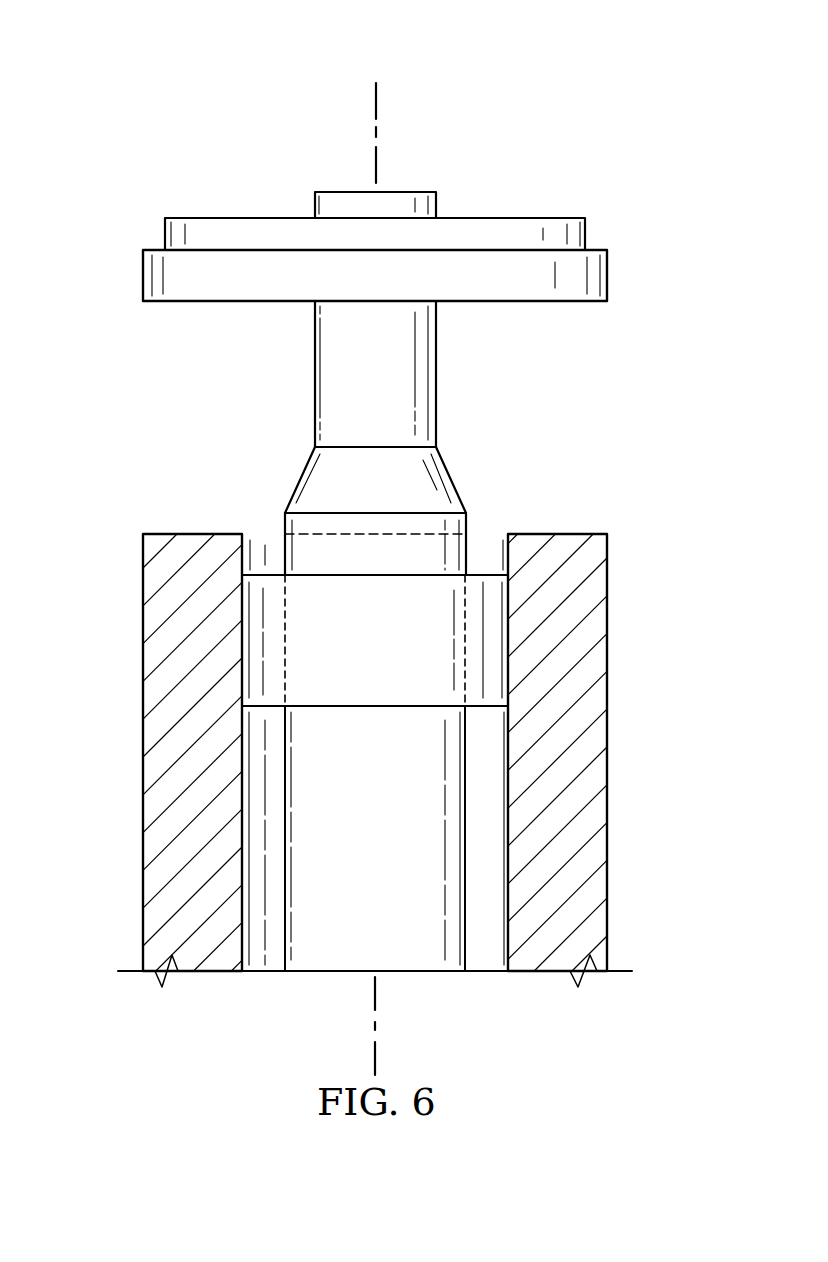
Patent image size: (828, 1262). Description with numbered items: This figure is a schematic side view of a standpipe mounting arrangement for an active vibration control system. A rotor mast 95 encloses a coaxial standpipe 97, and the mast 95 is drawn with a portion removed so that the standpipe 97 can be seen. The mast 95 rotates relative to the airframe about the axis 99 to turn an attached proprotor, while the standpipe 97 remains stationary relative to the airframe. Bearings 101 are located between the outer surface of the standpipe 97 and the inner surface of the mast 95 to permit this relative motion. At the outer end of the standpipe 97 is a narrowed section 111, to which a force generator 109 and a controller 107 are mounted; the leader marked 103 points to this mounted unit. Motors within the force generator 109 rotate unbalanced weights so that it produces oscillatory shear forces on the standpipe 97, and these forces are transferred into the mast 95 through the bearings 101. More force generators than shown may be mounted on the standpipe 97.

The mast 95 is at (608, 748).
The standpipe 97 is at (465, 948).
The axis 99 is at (378, 95).
The bearings 101 is at (377, 708).
The head assembly 103 is at (371, 246).
The controller 107 is at (587, 235).
The force generator 109 is at (608, 277).
The narrowed section 111 is at (314, 374).